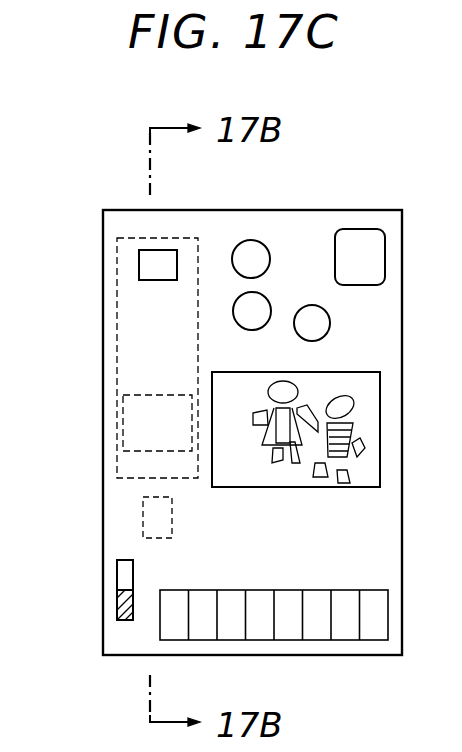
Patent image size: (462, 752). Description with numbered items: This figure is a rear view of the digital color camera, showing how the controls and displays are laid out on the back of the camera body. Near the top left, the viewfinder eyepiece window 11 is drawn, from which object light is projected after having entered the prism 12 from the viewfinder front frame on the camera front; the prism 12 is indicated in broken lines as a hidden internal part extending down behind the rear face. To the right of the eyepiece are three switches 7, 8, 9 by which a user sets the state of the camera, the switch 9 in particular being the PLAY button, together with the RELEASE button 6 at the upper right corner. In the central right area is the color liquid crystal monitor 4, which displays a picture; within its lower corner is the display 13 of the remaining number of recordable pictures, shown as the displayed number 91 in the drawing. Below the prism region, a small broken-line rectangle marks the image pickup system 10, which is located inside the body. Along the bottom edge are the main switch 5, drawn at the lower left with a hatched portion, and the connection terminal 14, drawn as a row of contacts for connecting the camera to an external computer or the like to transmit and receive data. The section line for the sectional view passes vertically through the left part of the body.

The color liquid crystal monitor 4 is at (370, 392).
The main switch 5 is at (117, 600).
The RELEASE button 6 is at (378, 248).
The switch 7 is at (259, 241).
The switch 8 is at (266, 300).
The PLAY button 9 is at (328, 323).
The image pickup system 10 is at (143, 513).
The viewfinder eyepiece window 11 is at (139, 262).
The prism 12 is at (117, 332).
The display of the remaining number of recordable pictures 13 is at (333, 499).
The connection terminal 14 is at (350, 636).
The displayed number 91 is at (238, 480).